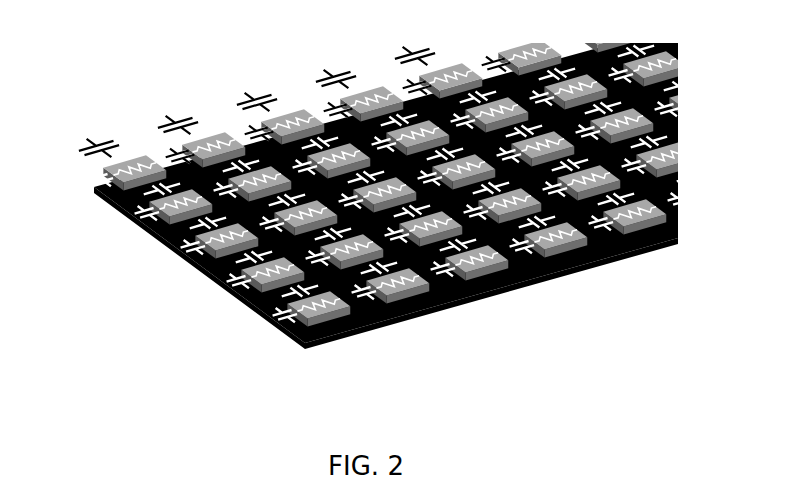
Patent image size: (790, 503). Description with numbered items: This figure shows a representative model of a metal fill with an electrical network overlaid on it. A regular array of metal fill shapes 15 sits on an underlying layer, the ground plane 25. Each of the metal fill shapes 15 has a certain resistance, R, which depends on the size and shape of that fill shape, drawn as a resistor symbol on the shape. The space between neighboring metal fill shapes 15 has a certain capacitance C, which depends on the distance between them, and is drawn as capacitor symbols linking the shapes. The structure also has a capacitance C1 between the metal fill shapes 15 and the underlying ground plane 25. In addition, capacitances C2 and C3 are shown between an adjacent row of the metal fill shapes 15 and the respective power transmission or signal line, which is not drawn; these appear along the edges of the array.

The metal fill shape 15 is at (100, 183).
The ground plane 25 is at (385, 320).
The capacitance C2 is at (245, 110).
The capacitance C is at (416, 169).
The capacitance C1 is at (188, 262).
The capacitance C3 is at (487, 297).